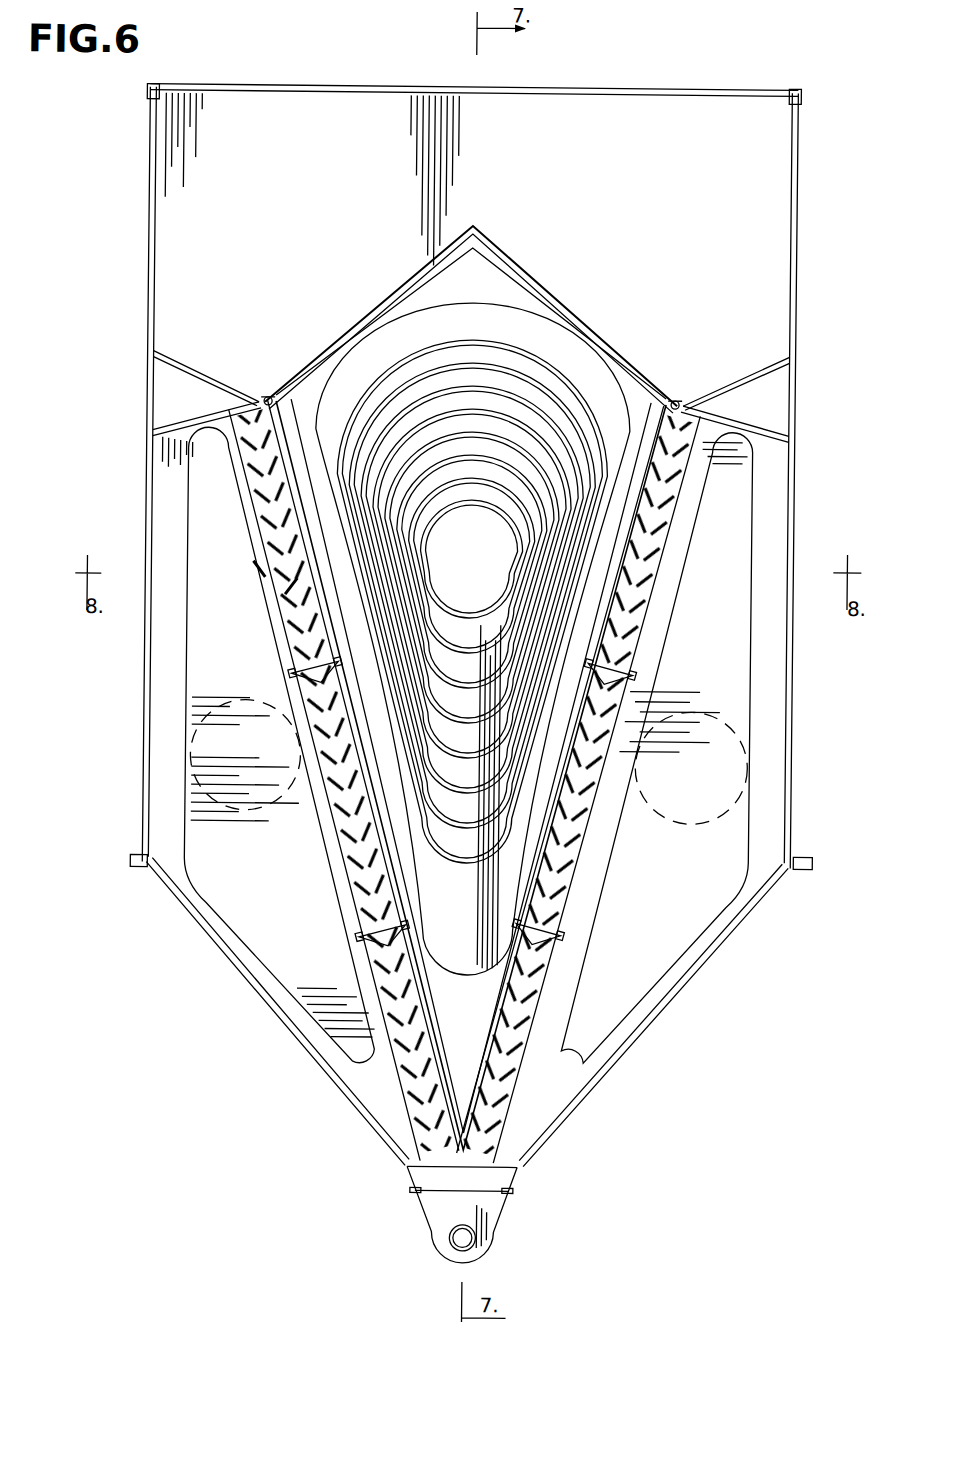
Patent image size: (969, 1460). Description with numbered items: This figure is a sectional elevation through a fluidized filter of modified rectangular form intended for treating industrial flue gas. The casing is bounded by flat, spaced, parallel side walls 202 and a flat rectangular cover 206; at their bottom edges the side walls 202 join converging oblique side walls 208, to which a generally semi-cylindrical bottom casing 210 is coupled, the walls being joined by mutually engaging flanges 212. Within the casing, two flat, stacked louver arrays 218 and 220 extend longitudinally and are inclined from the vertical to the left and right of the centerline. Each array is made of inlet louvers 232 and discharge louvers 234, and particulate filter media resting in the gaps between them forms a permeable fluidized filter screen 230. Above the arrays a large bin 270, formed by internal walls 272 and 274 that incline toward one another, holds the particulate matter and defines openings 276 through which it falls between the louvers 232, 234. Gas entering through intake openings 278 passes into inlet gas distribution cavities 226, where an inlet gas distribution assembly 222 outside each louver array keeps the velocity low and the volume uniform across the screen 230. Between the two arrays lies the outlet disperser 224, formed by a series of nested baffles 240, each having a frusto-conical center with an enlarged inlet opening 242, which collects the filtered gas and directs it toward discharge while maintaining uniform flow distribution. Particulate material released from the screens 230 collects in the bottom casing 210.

The side walls 202 is at (146, 328).
The cover 206 is at (591, 86).
The oblique side walls 208 is at (244, 990).
The bottom casing 210 is at (508, 1210).
The flanges 212 is at (804, 862).
The louver array 218 is at (279, 452).
The louver array 220 is at (706, 440).
The inlet gas distribution assembly 222 is at (196, 666).
The outlet disperser 224 is at (484, 280).
The inlet gas distribution cavity 226 is at (455, 1241).
The fluidized filter screen 230 is at (298, 630).
The inlet louvers 232 is at (280, 576).
The discharge louvers 234 is at (300, 599).
The baffles 240 is at (454, 830).
The inlet opening 242 is at (482, 622).
The bin 270 is at (752, 220).
The internal wall 272 is at (184, 374).
The internal wall 274 is at (316, 354).
The openings 276 is at (249, 399).
The intake openings 278 is at (250, 755).